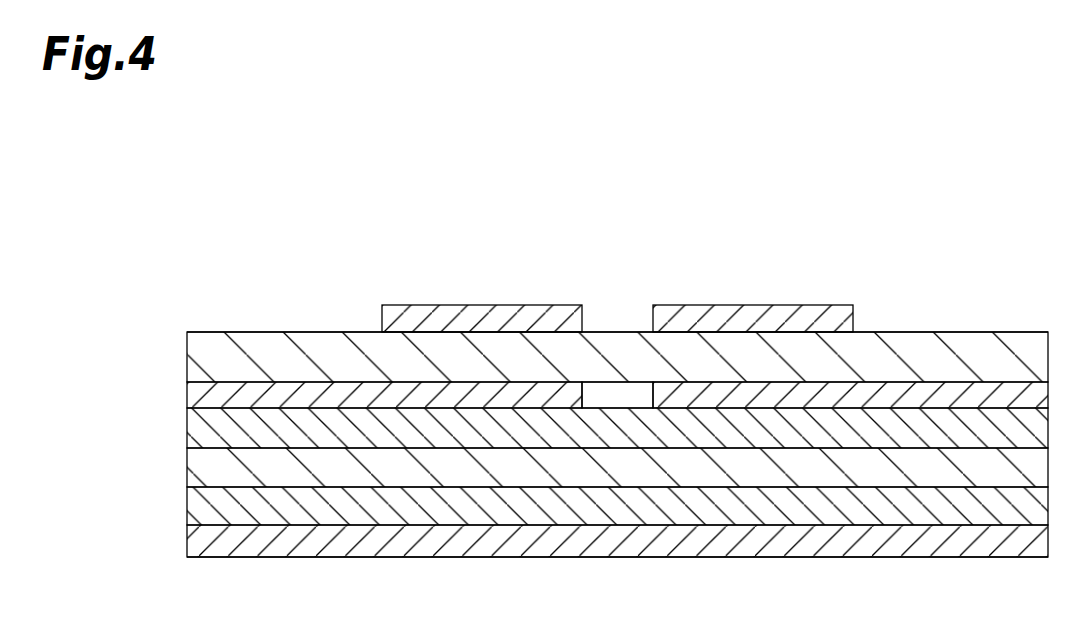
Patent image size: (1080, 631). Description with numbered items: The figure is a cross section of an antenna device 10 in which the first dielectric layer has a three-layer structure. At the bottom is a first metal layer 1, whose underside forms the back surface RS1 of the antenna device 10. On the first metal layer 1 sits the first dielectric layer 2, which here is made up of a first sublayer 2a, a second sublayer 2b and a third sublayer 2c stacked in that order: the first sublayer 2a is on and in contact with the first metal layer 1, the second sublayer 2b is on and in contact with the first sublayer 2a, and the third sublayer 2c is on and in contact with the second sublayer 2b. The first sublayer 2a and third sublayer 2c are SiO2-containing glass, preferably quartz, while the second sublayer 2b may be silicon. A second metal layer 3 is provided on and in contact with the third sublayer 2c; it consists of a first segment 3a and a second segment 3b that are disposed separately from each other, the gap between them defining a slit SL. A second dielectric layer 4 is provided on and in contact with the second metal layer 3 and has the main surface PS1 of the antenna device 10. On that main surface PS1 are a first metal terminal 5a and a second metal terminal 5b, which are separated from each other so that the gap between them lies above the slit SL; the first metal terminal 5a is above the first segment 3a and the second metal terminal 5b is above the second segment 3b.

The antenna device 10 is at (955, 212).
The first metal layer 1 is at (187, 542).
The first dielectric layer 2 is at (571, 468).
The first sublayer 2a is at (587, 507).
The second sublayer 2b is at (187, 468).
The third sublayer 2c is at (187, 430).
The second metal layer 3 is at (595, 332).
The first segment 3a is at (490, 397).
The second segment 3b is at (724, 397).
The second dielectric layer 4 is at (187, 362).
The first metal terminal 5a is at (403, 320).
The second metal terminal 5b is at (818, 318).
The main surface PS1 is at (264, 332).
The back surface RS1 is at (297, 557).
The slit SL is at (613, 395).